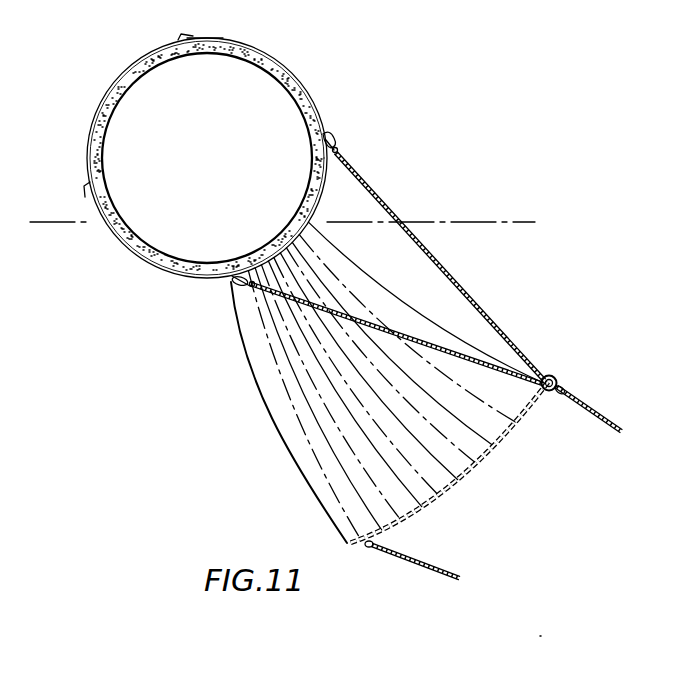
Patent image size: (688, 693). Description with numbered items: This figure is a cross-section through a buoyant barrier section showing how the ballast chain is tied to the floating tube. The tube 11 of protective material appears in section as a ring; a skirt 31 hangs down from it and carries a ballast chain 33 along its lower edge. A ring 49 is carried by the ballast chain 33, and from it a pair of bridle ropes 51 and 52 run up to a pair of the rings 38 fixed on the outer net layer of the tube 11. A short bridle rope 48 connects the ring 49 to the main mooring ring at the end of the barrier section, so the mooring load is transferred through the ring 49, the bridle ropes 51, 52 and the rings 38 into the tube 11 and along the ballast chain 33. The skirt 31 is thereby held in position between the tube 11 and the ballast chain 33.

The tube 11 is at (282, 50).
The skirt 31 is at (309, 441).
The ballast chain 33 is at (519, 424).
The rings 38 is at (326, 141).
The bridle rope 48 is at (603, 422).
The ring 49 is at (552, 376).
The bridle rope 51 is at (420, 338).
The bridle rope 52 is at (496, 326).